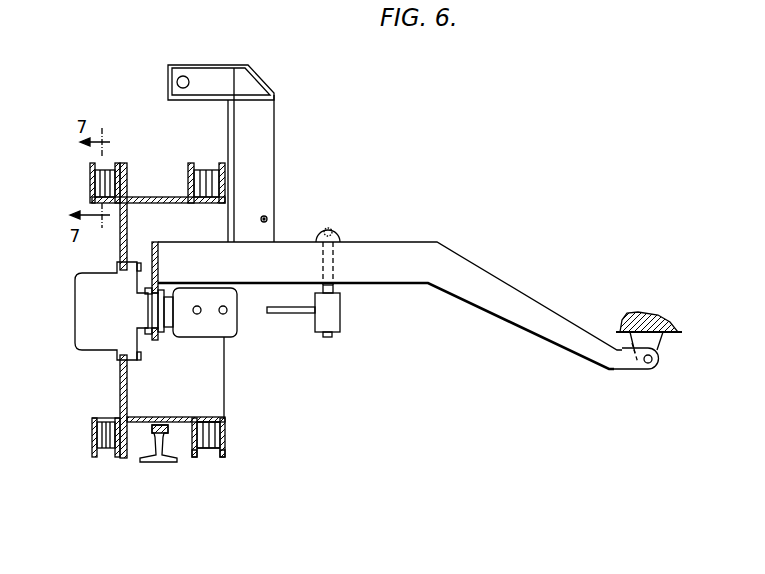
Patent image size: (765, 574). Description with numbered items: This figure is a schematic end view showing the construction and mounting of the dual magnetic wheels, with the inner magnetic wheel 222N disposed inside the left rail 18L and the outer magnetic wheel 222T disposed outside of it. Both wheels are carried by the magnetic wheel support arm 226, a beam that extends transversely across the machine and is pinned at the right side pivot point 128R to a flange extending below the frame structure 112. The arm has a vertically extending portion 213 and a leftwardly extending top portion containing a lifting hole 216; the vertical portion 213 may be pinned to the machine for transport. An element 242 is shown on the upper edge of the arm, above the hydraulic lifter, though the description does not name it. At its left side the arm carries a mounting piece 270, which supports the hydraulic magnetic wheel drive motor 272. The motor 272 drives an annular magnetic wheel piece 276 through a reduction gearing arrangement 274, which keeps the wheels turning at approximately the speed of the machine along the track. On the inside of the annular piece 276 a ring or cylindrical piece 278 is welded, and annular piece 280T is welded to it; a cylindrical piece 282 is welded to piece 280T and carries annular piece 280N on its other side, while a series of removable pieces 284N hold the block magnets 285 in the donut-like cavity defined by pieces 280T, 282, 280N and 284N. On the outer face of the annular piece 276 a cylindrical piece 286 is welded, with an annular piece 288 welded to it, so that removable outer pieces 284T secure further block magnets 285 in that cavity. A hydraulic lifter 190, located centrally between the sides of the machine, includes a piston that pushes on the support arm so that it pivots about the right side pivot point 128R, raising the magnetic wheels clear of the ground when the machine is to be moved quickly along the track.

The lifting hole 216 is at (184, 76).
The vertically extending portion 213 is at (266, 141).
The block magnets 285 is at (106, 172).
The outer magnetic wheel 222T is at (126, 170).
The inner magnetic wheel 222N is at (189, 182).
The mounting piece 270 is at (149, 242).
The magnetic wheel support arm 226 is at (415, 242).
The pivot pin 242 is at (331, 223).
The hydraulic lifter 190 is at (334, 302).
The frame structure 112 is at (649, 311).
The right side pivot point 128R is at (655, 372).
The hydraulic magnetic wheel drive motor 272 is at (212, 332).
The reduction gearing arrangement 274 is at (87, 342).
The annular magnetic wheel piece 276 is at (128, 393).
The ring or cylindrical piece 278 is at (173, 417).
The removable pieces 284N is at (217, 414).
The annular piece 280N is at (226, 428).
The cylindrical piece 282 is at (212, 456).
The annular piece 280T is at (190, 455).
The removable outer pieces 284T is at (108, 416).
The annular piece 288 is at (93, 443).
The cylindrical piece 286 is at (112, 450).
The left rail 18L is at (182, 449).